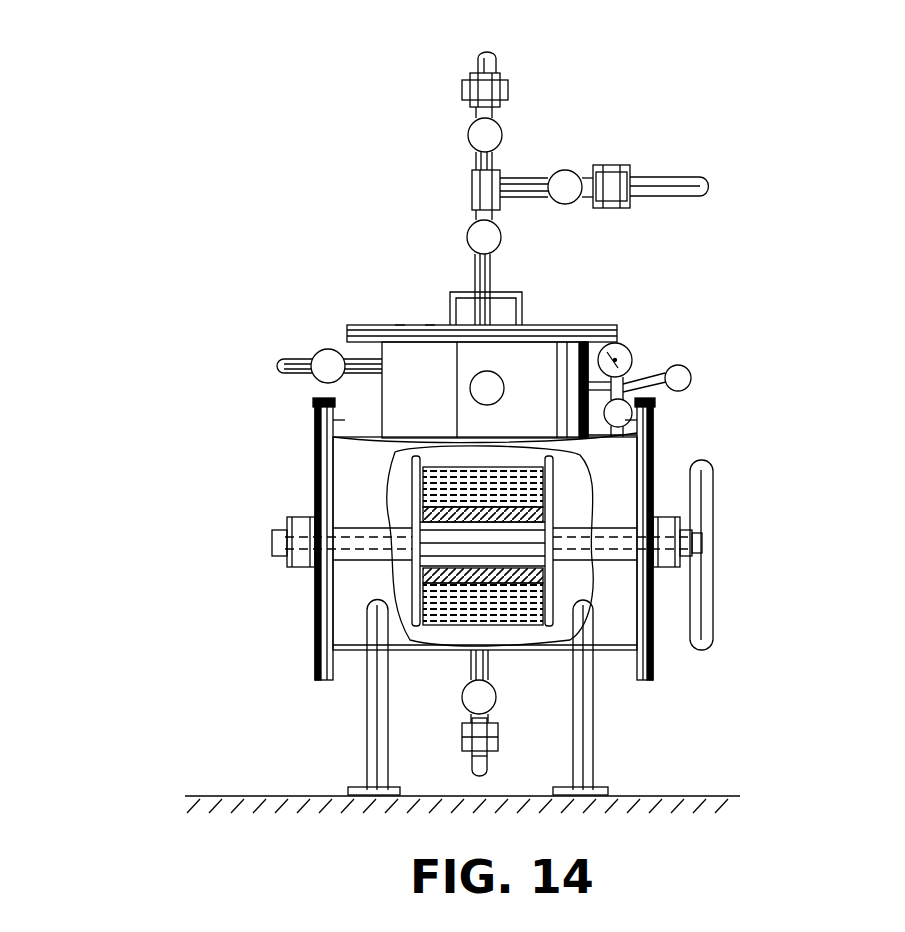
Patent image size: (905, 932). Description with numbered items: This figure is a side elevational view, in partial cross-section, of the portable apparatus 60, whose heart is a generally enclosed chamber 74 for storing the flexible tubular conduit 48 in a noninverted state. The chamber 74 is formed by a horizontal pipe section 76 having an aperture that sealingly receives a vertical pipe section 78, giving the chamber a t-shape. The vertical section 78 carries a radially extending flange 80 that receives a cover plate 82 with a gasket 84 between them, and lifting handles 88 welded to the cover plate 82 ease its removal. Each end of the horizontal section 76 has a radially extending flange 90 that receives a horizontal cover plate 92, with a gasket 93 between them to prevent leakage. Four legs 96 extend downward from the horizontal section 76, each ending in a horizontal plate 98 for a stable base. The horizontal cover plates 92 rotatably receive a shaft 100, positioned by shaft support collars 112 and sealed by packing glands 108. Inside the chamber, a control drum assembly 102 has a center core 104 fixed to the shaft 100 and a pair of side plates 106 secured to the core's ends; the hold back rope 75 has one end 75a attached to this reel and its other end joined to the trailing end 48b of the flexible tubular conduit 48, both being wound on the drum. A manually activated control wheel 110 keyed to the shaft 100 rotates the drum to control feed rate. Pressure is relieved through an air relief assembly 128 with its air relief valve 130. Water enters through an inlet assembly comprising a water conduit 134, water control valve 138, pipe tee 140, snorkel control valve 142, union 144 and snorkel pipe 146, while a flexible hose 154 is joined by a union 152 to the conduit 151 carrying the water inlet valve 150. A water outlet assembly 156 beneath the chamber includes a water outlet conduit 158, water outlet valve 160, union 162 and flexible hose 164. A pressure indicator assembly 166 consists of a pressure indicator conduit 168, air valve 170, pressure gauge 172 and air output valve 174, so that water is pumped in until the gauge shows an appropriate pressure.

The snorkel pipe 146 is at (490, 58).
The union 144 is at (508, 84).
The snorkel control valve 142 is at (496, 126).
The pipe tee 140 is at (500, 178).
The conduit 151 is at (530, 197).
The water inlet valve 150 is at (573, 170).
The union 152 is at (615, 165).
The flexible hose 154 is at (690, 178).
The water control valve 138 is at (501, 237).
The water conduit 134 is at (490, 268).
The lifting handles 88 is at (522, 300).
The flange 80 is at (347, 328).
The gasket 84 is at (400, 325).
The cover plate 82 is at (430, 325).
The vertical pipe section 78 is at (426, 394).
The water outlet conduit 158 is at (504, 388).
The air relief assembly 128 is at (278, 346).
The air relief valve 130 is at (326, 349).
The pressure indicator conduit 168 is at (602, 386).
The pressure gauge 172 is at (628, 350).
The pressure indicator assembly 166 is at (630, 328).
The air valve 170 is at (604, 413).
The air output valve 174 is at (691, 372).
The portable apparatus 60 is at (688, 245).
The horizontal pipe section 76 is at (622, 630).
The horizontal cover plates 92 is at (313, 416).
The gasket 93 is at (325, 400).
The flanges 90 is at (334, 422).
The chamber 74 is at (350, 665).
The center core 104 is at (472, 552).
The flexible tubular conduit 48 is at (412, 463).
The trailing end 48b is at (508, 552).
The hold back rope 75 is at (530, 520).
The end of hold back rope 75a is at (438, 628).
The control drum assembly 102 is at (404, 519).
The side plates 106 is at (412, 566).
The shaft support collars 112 is at (292, 517).
The packing glands 108 is at (302, 567).
The shaft 100 is at (703, 543).
The control wheel 110 is at (703, 478).
The legs 96 is at (367, 732).
The horizontal plate 98 is at (380, 800).
The water outlet valve 160 is at (496, 697).
The water outlet assembly 156 is at (458, 720).
The union 162 is at (498, 735).
The flexible hose 164 is at (487, 768).